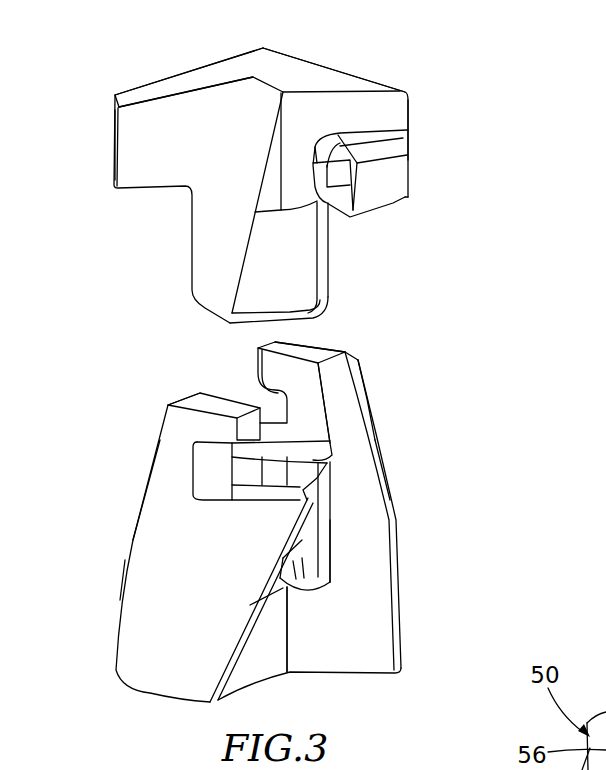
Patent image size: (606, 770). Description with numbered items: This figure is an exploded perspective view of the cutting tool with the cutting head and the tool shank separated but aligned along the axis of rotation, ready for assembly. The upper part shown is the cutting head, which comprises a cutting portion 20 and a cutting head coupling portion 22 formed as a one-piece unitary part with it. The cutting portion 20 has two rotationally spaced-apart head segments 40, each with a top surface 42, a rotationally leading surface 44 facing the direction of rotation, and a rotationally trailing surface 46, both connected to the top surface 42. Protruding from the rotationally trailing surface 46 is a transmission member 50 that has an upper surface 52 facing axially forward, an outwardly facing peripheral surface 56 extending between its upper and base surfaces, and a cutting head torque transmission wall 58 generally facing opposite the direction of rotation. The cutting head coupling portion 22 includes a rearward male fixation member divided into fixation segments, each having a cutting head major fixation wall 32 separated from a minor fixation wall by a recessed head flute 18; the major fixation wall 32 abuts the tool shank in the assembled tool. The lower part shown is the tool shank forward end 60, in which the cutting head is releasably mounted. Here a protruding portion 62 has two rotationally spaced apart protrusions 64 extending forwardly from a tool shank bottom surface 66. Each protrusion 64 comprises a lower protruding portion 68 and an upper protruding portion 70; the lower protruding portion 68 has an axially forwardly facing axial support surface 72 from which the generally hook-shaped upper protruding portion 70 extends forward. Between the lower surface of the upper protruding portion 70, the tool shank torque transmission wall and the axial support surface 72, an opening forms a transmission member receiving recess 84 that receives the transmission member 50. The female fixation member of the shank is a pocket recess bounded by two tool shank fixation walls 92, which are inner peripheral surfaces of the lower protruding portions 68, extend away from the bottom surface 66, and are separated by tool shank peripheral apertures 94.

The head flute 18 is at (218, 222).
The cutting portion 20 is at (470, 111).
The cutting head coupling portion 22 is at (487, 248).
The cutting head major fixation wall 32 is at (298, 288).
The head segment 40 is at (160, 72).
The top surface 42 is at (222, 65).
The rotationally leading surface 44 is at (138, 133).
The rotationally trailing surface 46 is at (408, 112).
The transmission member 50 is at (418, 210).
The upper surface 52 is at (383, 147).
The outwardly facing peripheral surface 56 is at (383, 175).
The cutting head torque transmission wall 58 is at (338, 182).
The tool shank forward end 60 is at (411, 368).
The protruding portion 62 is at (444, 420).
The protrusion 64 is at (402, 445).
The tool shank bottom surface 66 is at (283, 588).
The lower protruding portion 68 is at (444, 472).
The upper protruding portion 70 is at (391, 396).
The axial support surface 72 is at (282, 492).
The transmission member receiving recess 84 is at (186, 471).
The tool shank fixation wall 92 is at (303, 582).
The tool shank peripheral aperture 94 is at (397, 570).